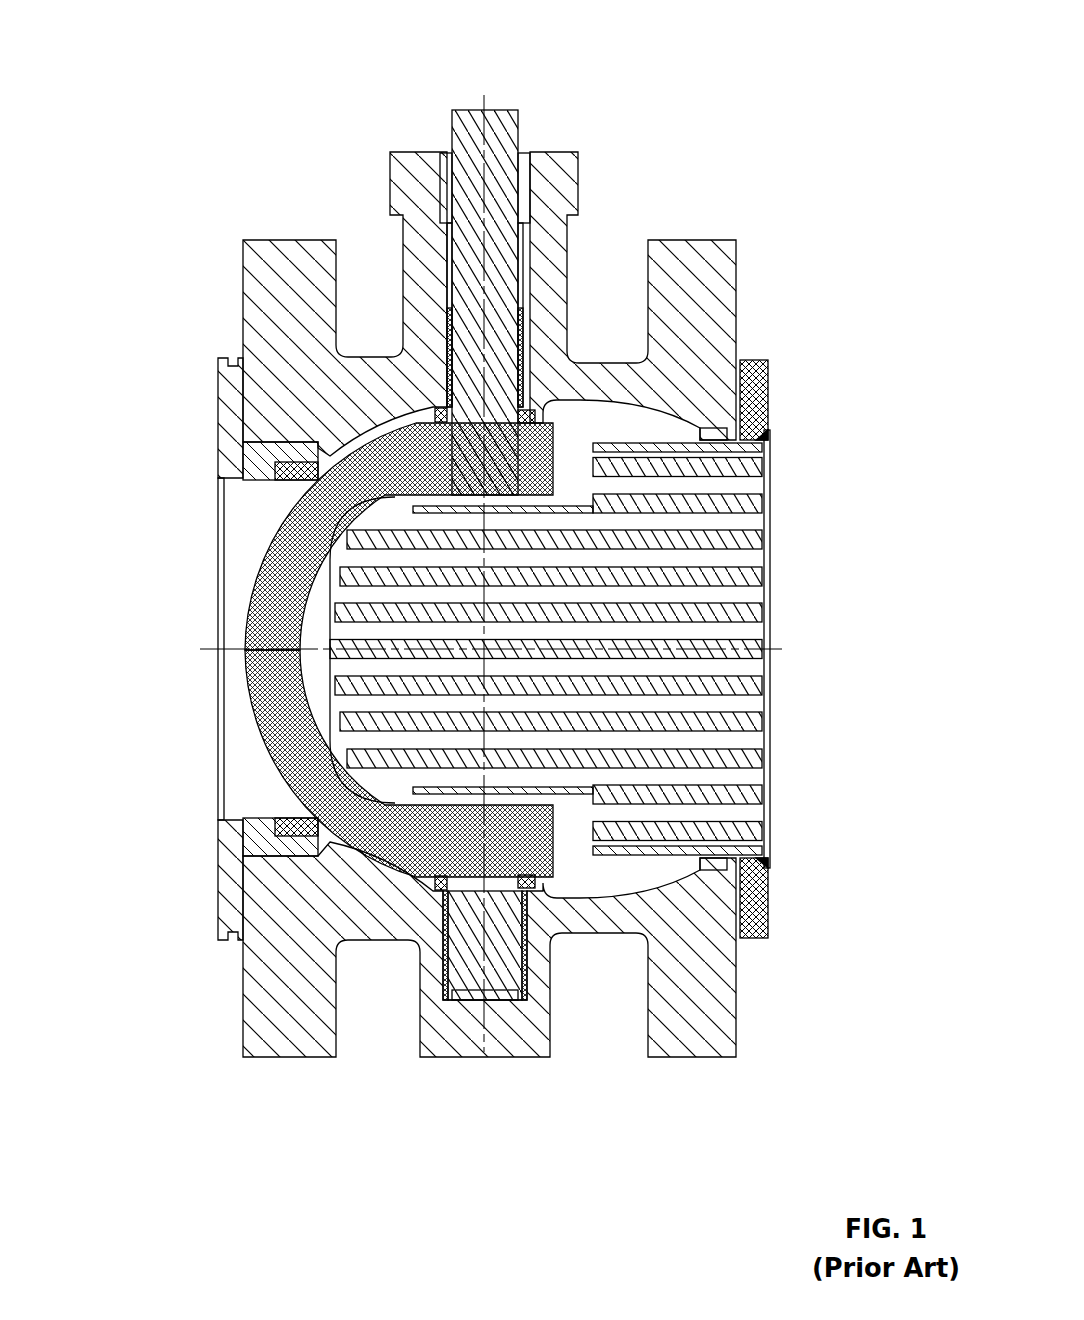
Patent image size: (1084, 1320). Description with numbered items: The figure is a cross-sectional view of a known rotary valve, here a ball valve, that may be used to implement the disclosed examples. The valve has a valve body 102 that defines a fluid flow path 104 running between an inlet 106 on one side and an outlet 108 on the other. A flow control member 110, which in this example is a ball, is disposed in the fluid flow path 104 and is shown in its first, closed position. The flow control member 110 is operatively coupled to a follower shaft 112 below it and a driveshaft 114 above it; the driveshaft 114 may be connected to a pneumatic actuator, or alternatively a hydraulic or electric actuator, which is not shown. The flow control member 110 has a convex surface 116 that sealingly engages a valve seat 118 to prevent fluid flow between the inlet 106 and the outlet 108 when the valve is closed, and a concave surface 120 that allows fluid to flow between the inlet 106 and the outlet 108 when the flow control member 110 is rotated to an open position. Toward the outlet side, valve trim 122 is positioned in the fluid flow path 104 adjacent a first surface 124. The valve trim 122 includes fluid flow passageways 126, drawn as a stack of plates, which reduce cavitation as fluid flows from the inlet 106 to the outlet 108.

The valve body 102 is at (712, 272).
The fluid flow path 104 is at (128, 656).
The inlet 106 is at (236, 517).
The outlet 108 is at (645, 426).
The flow control member 110 is at (263, 612).
The follower shaft 112 is at (500, 975).
The driveshaft 114 is at (508, 117).
The convex surface 116 is at (262, 566).
The valve seat 118 is at (245, 812).
The concave surface 120 is at (270, 745).
The valve trim 122 is at (766, 787).
The first surface 124 is at (735, 968).
The fluid flow passageways 126 is at (750, 742).